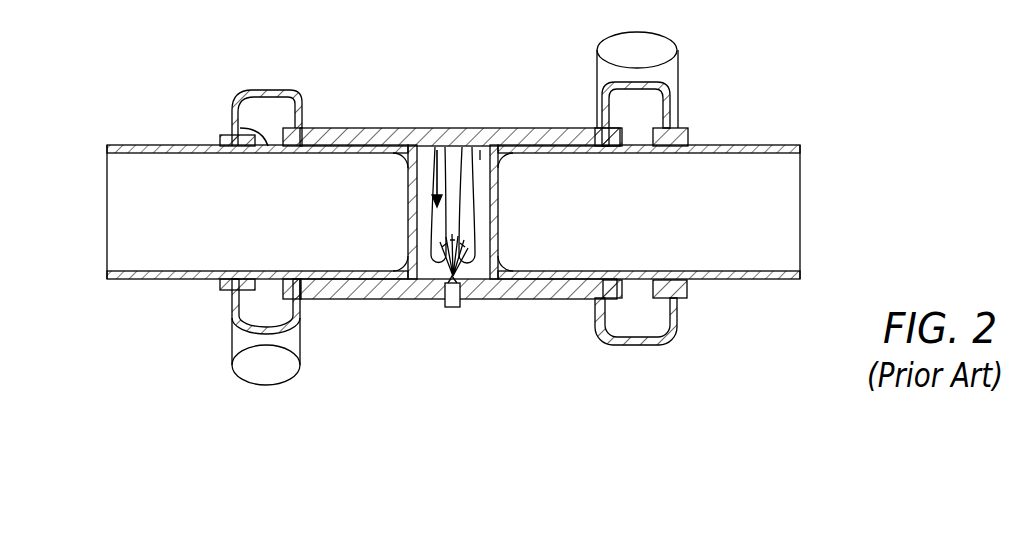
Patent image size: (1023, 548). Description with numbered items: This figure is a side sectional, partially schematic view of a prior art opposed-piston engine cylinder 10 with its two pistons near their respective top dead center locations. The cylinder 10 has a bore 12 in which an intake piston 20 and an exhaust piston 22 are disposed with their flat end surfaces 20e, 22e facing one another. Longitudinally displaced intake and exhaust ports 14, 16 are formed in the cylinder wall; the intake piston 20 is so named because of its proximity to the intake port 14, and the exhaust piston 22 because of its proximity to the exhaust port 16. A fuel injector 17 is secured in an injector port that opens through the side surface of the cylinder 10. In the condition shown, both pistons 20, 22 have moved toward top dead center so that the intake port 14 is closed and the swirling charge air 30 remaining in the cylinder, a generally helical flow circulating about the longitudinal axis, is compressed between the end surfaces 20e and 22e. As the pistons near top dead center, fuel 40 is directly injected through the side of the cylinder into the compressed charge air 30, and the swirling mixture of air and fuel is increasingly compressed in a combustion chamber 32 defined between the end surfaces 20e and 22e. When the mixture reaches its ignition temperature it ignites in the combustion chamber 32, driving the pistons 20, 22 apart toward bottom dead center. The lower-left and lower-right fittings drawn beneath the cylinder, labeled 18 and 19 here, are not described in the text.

The cylinder 10 is at (515, 128).
The bore 12 is at (458, 158).
The intake port 14 is at (260, 127).
The exhaust port 16 is at (638, 146).
The fuel injector 17 is at (452, 307).
The lower left fitting 18 is at (260, 332).
The lower right fitting 19 is at (641, 312).
The intake piston 20 is at (137, 280).
The end surface of intake piston 20e is at (416, 205).
The exhaust piston 22 is at (740, 282).
The end surface of exhaust piston 22e is at (480, 245).
The swirl 30 is at (448, 262).
The combustion chamber 32 is at (480, 155).
The fuel 40 is at (443, 250).